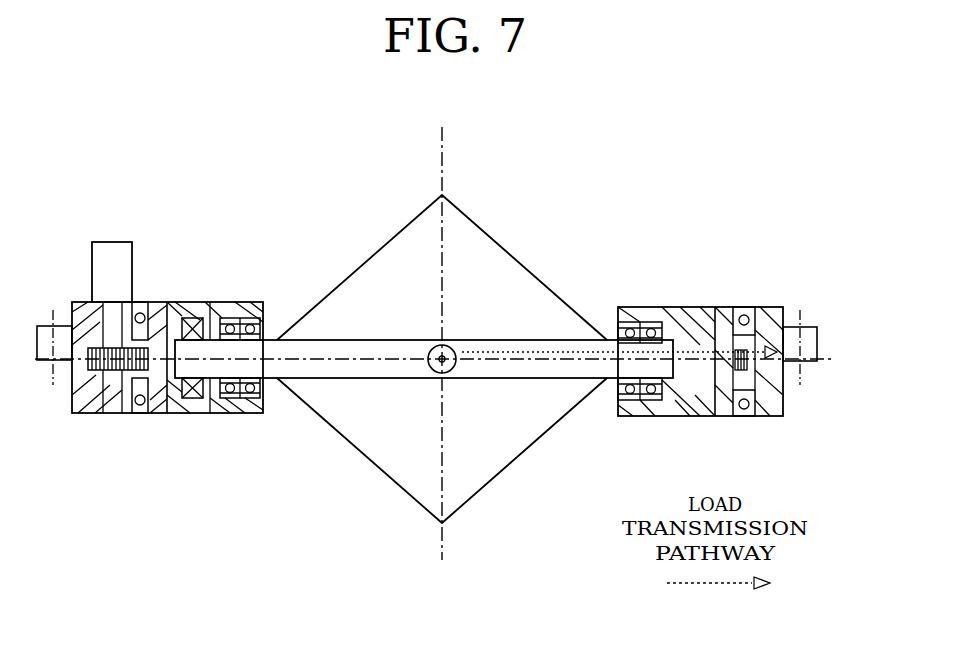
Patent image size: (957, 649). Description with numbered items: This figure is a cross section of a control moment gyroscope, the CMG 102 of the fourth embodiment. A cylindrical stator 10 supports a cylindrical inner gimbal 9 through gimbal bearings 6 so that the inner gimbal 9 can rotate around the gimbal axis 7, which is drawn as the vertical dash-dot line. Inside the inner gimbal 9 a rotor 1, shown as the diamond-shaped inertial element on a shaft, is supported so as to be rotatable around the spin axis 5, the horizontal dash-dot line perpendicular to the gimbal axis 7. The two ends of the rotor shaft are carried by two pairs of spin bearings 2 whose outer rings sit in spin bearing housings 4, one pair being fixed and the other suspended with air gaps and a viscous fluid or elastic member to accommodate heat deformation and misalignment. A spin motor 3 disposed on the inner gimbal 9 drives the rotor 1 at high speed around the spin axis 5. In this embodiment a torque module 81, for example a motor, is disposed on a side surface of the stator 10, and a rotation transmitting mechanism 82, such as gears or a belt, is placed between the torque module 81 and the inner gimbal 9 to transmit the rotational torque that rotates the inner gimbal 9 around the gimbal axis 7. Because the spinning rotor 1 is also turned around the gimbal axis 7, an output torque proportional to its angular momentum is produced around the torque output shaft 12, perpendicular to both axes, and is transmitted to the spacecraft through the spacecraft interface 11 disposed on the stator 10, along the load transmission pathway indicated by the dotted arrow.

The rotor 1 is at (490, 232).
The spin bearings 2 is at (255, 302).
The spin motor 3 is at (193, 303).
The spin bearing housings 4 is at (643, 308).
The spin axis 5 is at (842, 359).
The gimbal bearings 6 is at (147, 303).
The gimbal axis 7 is at (443, 155).
The inner gimbal 9 is at (150, 390).
The stator 10 is at (772, 308).
The spacecraft interface 11 is at (813, 361).
The torque output shaft 12 is at (457, 371).
The torque module 81 is at (110, 252).
The rotation transmitting mechanism 82 is at (113, 373).
The control moment gyroscope 102 is at (91, 141).